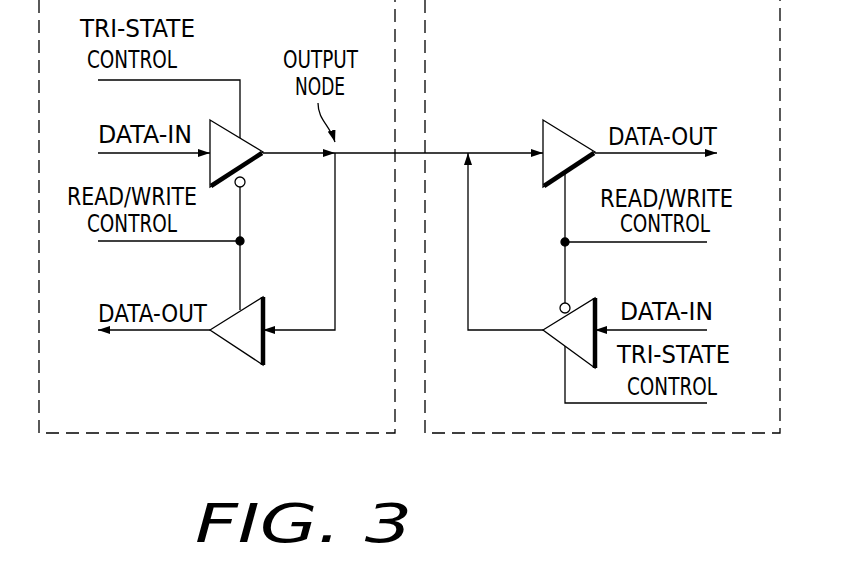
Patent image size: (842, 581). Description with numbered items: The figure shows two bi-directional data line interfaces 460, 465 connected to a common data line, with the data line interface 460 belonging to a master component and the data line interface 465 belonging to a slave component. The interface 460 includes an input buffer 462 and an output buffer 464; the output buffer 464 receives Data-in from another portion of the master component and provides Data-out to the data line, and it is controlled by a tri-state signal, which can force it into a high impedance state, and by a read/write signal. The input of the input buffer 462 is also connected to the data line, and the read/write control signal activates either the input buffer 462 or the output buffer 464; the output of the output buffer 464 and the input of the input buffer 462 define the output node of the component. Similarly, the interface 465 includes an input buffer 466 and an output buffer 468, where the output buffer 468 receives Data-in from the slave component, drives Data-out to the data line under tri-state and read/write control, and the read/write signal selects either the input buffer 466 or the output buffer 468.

The data line interface 460 is at (103, 417).
The input buffer 462 is at (228, 344).
The output buffer 464 is at (253, 162).
The data line interface 465 is at (488, 418).
The input buffer 466 is at (543, 130).
The output buffer 468 is at (553, 338).